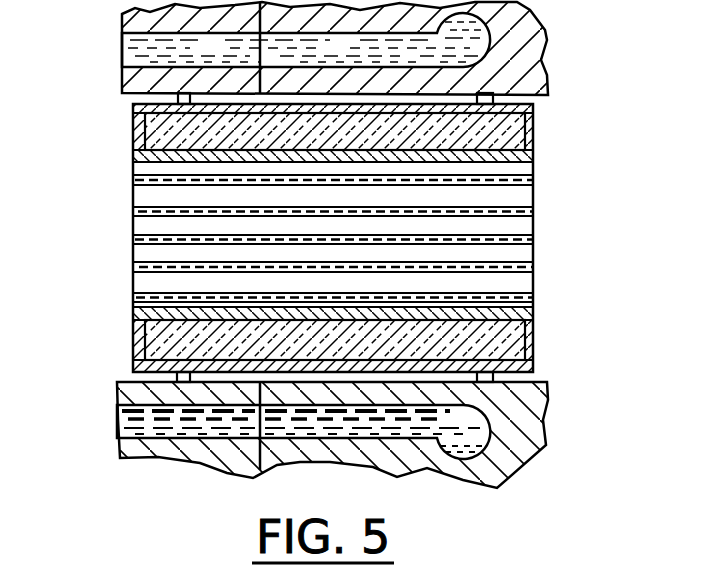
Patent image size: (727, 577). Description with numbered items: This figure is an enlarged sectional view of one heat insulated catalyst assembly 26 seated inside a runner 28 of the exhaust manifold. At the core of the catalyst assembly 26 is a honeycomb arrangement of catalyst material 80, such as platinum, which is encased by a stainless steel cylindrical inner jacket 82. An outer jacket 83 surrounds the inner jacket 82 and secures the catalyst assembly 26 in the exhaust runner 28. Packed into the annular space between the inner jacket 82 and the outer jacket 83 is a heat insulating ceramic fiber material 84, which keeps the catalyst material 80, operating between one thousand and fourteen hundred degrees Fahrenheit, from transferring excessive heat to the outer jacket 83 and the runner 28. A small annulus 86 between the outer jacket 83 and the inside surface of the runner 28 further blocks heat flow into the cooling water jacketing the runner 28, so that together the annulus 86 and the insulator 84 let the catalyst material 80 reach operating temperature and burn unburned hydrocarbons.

The catalyst assembly 26 is at (118, 208).
The runner 28 is at (120, 452).
The catalyst material 80 is at (518, 240).
The inner jacket 82 is at (537, 142).
The outer jacket 83 is at (142, 373).
The heat insulating ceramic fiber material 84 is at (135, 133).
The annulus 86 is at (460, 377).